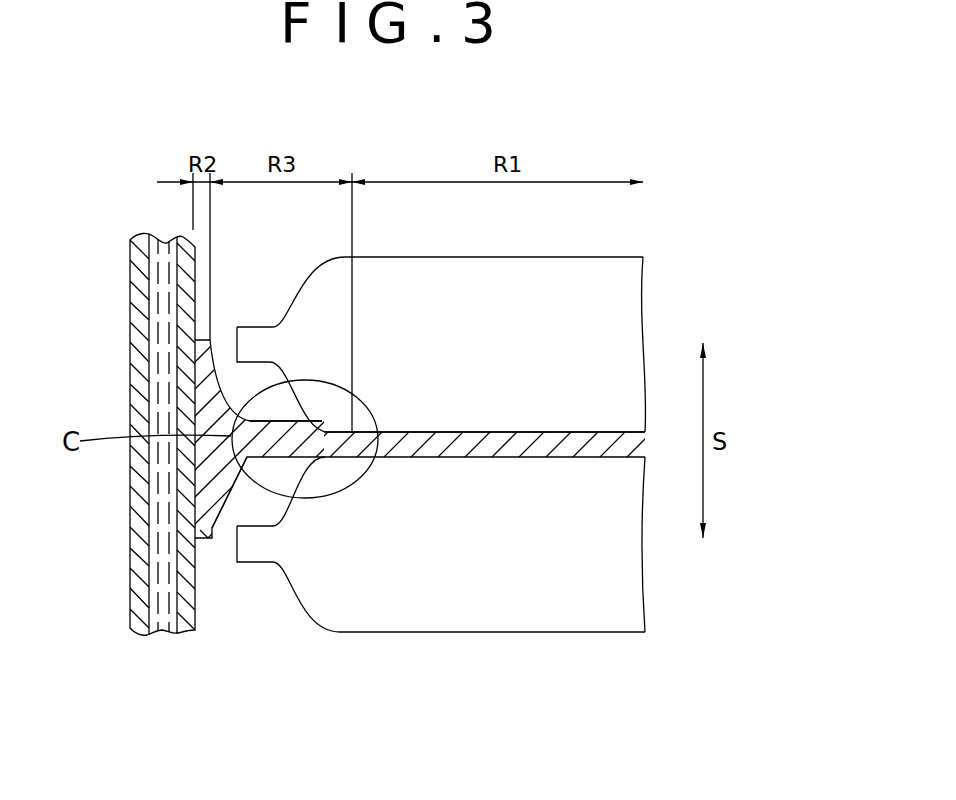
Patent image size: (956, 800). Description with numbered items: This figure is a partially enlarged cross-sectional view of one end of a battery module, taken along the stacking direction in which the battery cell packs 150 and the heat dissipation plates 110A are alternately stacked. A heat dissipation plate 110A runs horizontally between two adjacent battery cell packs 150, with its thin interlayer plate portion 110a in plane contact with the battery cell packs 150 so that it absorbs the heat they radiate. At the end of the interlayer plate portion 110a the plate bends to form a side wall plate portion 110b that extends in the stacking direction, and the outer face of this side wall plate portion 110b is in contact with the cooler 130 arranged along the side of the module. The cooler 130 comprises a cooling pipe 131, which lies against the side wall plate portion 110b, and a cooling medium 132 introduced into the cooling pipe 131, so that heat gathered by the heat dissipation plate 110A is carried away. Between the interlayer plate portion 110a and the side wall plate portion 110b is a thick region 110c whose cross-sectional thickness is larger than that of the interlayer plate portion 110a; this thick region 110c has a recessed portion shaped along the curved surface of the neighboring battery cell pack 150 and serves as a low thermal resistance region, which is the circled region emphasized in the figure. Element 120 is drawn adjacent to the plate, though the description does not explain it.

The interlayer plate portion 110a is at (498, 458).
The heat dissipation plate 110A is at (230, 490).
The side wall plate portion 110b is at (226, 484).
The thick region 110c is at (268, 447).
The resin molded portion 120 is at (428, 603).
The cooler 130 is at (187, 697).
The cooling pipe 131 is at (130, 615).
The cooling medium 132 is at (160, 642).
The battery cell pack 150 is at (613, 303).